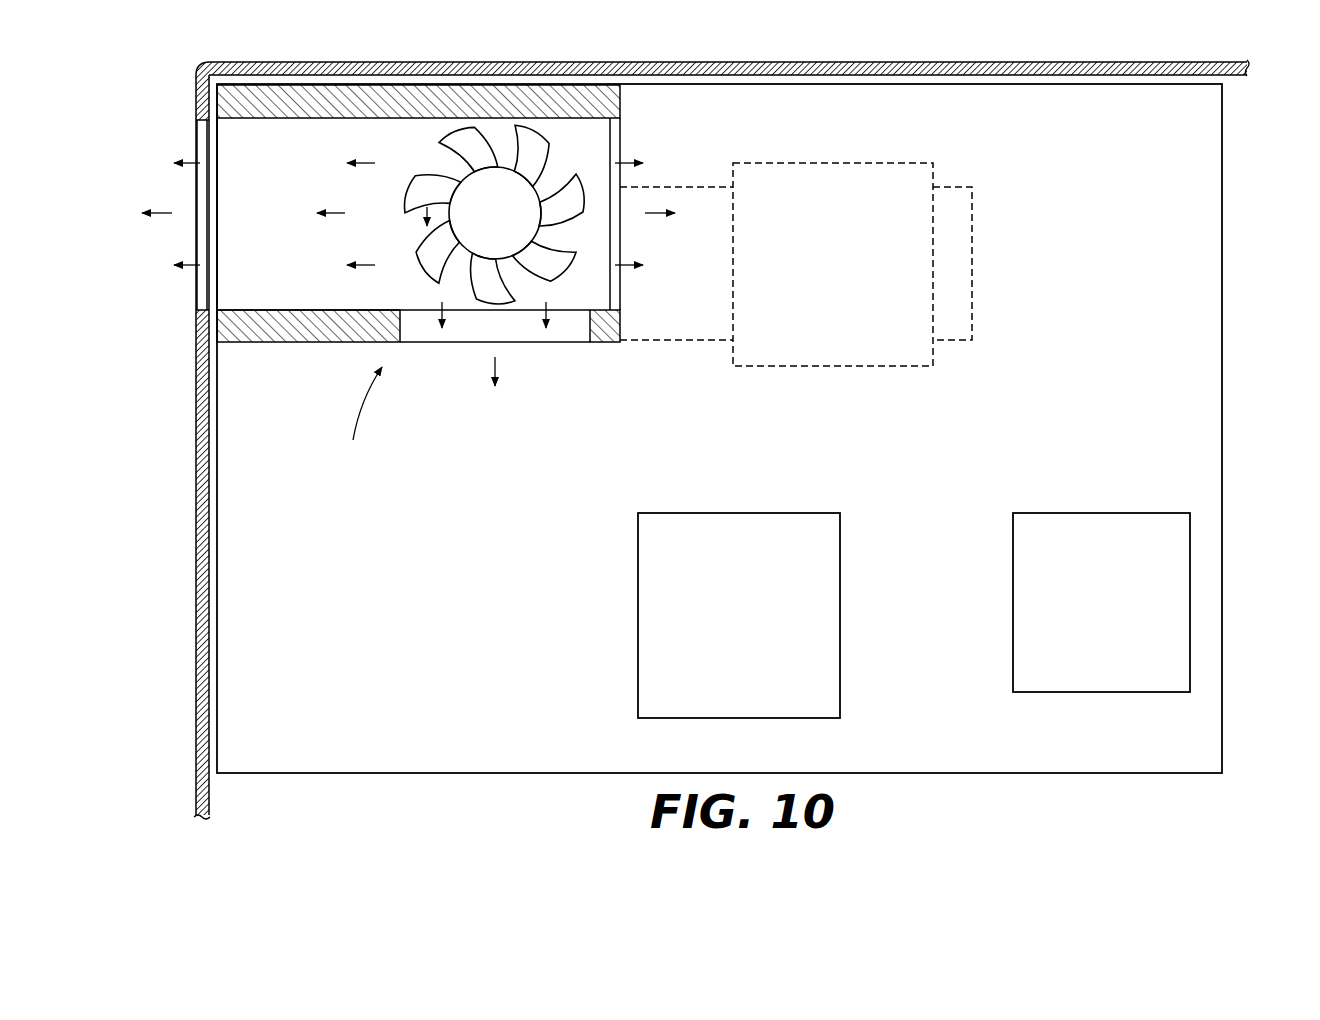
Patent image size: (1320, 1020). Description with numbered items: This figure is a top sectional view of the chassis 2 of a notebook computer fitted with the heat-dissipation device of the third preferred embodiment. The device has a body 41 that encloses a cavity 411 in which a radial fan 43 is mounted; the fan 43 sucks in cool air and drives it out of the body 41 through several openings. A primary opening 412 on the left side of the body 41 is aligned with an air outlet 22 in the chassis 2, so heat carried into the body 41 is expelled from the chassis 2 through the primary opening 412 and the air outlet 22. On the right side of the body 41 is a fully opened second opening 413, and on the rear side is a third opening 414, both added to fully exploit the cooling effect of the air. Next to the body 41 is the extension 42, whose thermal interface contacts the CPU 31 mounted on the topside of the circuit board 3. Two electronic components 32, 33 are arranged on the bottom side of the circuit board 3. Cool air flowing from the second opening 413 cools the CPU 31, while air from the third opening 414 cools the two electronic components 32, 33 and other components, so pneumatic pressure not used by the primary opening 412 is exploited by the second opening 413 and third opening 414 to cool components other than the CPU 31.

The chassis 2 is at (200, 530).
The air outlet 22 is at (200, 148).
The circuit board 3 is at (1215, 393).
The CPU 31 is at (830, 352).
The electronic component 32 is at (652, 601).
The electronic component 33 is at (1185, 589).
The body 41 is at (423, 259).
The cavity 411 is at (302, 299).
The primary opening 412 is at (223, 270).
The second opening 413 is at (613, 148).
The third opening 414 is at (515, 333).
The extension 42 is at (972, 238).
The fan 43 is at (480, 290).